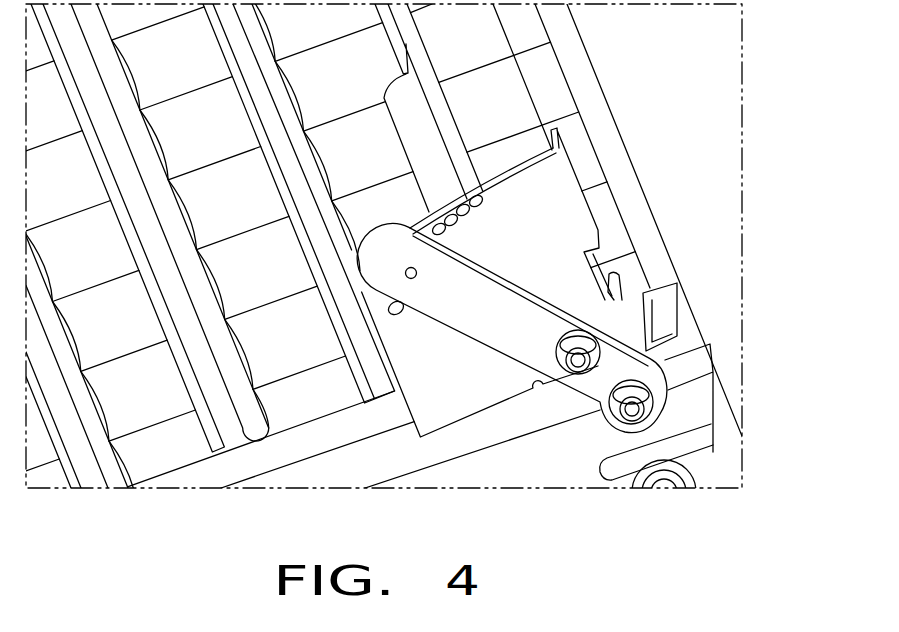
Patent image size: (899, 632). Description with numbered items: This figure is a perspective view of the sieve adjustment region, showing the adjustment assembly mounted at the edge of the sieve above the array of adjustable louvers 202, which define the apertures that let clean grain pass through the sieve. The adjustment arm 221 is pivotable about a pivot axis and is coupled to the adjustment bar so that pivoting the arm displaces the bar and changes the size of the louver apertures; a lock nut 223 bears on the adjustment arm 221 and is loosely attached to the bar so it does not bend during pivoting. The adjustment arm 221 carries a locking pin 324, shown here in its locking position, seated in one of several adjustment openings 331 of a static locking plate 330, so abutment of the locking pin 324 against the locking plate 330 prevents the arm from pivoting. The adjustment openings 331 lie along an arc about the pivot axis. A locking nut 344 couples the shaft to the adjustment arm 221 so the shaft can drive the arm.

The adjustable louvers 202 is at (436, 57).
The adjustment arm 221 is at (510, 323).
The lock nut 223 is at (644, 409).
The locking pin 324 is at (414, 279).
The locking plate 330 is at (562, 235).
The adjustment openings 331 is at (475, 195).
The locking nut 344 is at (565, 357).